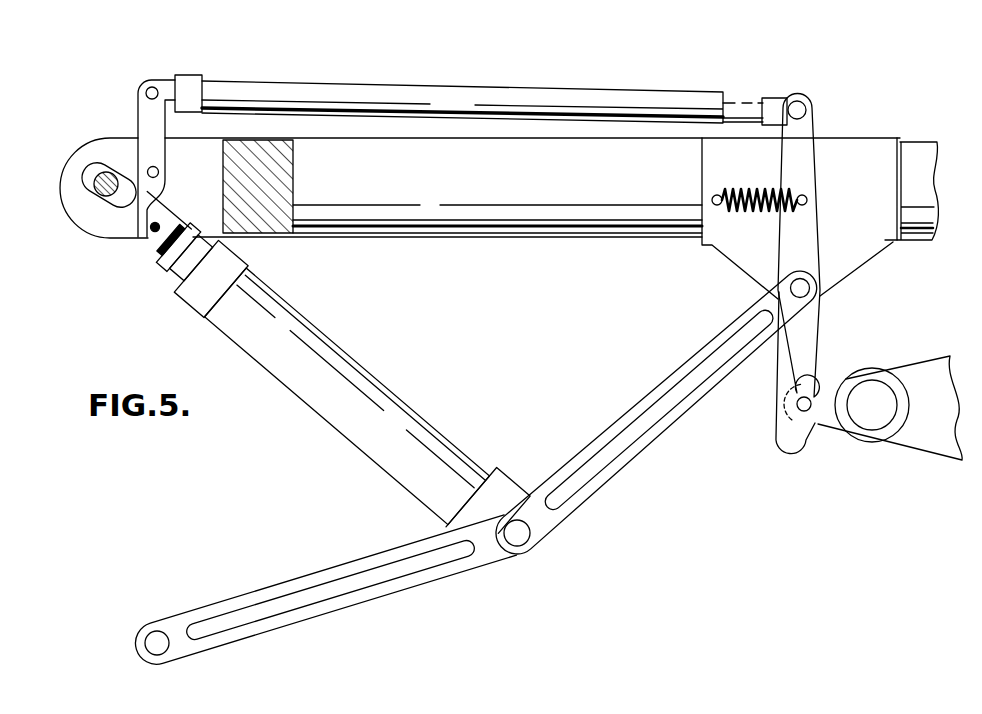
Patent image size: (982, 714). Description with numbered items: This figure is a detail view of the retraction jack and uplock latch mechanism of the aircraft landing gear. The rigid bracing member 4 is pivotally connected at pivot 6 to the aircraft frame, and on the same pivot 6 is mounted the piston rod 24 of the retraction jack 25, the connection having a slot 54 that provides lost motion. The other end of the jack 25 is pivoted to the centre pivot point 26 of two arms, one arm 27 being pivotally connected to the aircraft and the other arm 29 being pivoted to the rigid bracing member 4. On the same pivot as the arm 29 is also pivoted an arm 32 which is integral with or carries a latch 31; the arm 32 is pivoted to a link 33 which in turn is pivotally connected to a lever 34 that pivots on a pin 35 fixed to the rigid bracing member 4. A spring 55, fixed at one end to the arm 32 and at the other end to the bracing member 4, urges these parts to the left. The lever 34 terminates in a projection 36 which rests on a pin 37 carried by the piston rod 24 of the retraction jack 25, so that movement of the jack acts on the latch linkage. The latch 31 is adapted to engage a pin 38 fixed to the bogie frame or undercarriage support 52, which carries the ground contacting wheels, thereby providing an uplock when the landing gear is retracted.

The rigid bracing member 4 is at (448, 220).
The pivot 6 is at (102, 198).
The piston rod 24 is at (165, 263).
The retraction jack 25 is at (366, 395).
The centre pivot point 26 is at (520, 533).
The arm 27 is at (372, 580).
The arm 29 is at (648, 422).
The latch 31 is at (795, 437).
The arm 32 is at (802, 158).
The link 33 is at (457, 97).
The lever 34 is at (155, 132).
The pin 35 is at (158, 172).
The projection 36 is at (147, 238).
The pin 37 is at (162, 220).
The pin 38 is at (803, 393).
The bogie frame or undercarriage support 52 is at (923, 438).
The slot 54 is at (127, 205).
The spring 55 is at (740, 192).